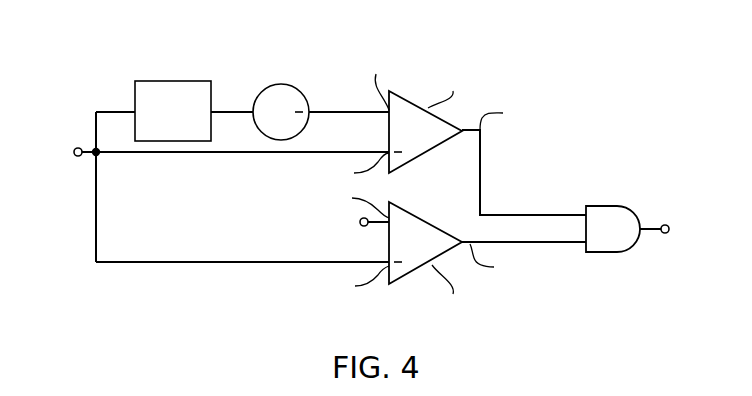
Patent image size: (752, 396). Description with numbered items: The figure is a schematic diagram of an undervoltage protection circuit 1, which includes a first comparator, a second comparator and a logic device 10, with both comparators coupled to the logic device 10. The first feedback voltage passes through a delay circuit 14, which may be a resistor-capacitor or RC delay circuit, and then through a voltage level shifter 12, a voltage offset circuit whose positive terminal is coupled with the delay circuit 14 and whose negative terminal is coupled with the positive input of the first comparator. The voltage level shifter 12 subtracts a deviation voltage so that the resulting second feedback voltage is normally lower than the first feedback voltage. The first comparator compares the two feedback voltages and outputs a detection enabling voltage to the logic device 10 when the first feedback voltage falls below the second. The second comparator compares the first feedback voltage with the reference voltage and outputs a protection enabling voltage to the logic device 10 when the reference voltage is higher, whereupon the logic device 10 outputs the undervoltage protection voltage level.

The undervoltage protection circuit 1 is at (625, 44).
The logic device 10 is at (618, 212).
The voltage level shifter 12 is at (281, 84).
The delay circuit 14 is at (172, 81).